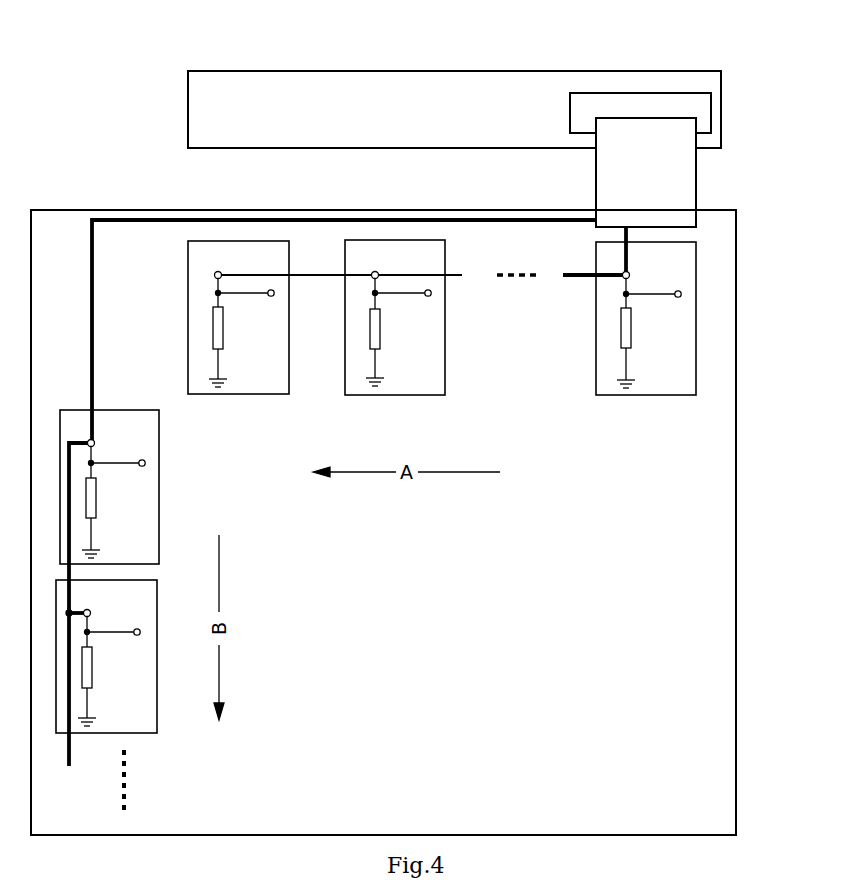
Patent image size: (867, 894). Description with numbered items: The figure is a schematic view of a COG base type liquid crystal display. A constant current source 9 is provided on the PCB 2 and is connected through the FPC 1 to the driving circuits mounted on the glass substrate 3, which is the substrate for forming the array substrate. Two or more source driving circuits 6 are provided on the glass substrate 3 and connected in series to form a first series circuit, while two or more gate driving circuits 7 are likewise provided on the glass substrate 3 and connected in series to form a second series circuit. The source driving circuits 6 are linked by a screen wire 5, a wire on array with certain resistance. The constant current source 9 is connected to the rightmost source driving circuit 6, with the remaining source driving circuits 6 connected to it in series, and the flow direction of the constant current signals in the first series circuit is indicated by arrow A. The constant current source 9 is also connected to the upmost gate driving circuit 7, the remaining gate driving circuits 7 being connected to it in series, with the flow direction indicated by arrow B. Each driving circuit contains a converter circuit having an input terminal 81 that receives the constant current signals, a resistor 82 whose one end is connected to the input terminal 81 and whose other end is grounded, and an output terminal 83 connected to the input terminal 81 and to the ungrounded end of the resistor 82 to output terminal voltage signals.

The FPC 1 is at (690, 194).
The PCB 2 is at (424, 70).
The glass substrate 3 is at (736, 578).
The screen wire 5 is at (315, 277).
The source driving circuit 6 is at (188, 287).
The gate driving circuit 7 is at (153, 494).
The constant current source 9 is at (595, 103).
The input terminal 81 is at (378, 273).
The resistor 82 is at (382, 333).
The output terminal 83 is at (430, 296).